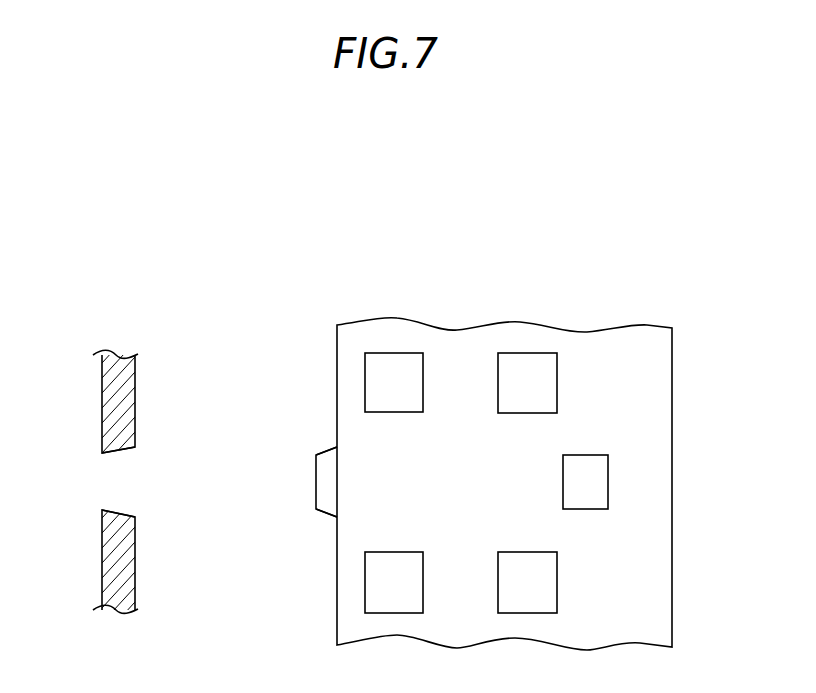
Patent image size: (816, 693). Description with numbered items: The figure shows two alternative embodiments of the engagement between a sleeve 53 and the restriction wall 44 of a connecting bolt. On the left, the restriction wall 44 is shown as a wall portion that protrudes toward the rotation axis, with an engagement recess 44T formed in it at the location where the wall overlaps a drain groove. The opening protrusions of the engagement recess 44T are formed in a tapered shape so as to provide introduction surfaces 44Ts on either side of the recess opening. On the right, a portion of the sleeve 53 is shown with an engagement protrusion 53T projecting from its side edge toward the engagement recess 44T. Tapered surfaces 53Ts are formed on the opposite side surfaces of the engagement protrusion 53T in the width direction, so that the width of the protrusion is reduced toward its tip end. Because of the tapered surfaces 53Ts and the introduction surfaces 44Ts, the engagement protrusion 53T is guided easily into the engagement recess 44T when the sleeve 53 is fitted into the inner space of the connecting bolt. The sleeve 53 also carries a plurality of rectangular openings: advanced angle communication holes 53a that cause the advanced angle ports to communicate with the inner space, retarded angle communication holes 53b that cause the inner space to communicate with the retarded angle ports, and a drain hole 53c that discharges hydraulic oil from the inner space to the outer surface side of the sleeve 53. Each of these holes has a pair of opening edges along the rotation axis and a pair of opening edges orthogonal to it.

The restriction wall 44 is at (102, 402).
The engagement recess 44T is at (100, 482).
The introduction surface 44Ts is at (122, 454).
The sleeve 53 is at (673, 443).
The engagement protrusion 53T is at (320, 483).
The tapered surface 53Ts is at (327, 448).
The advanced angle communication hole 53a is at (418, 398).
The retarded angle communication hole 53b is at (500, 395).
The drain hole 53c is at (578, 457).